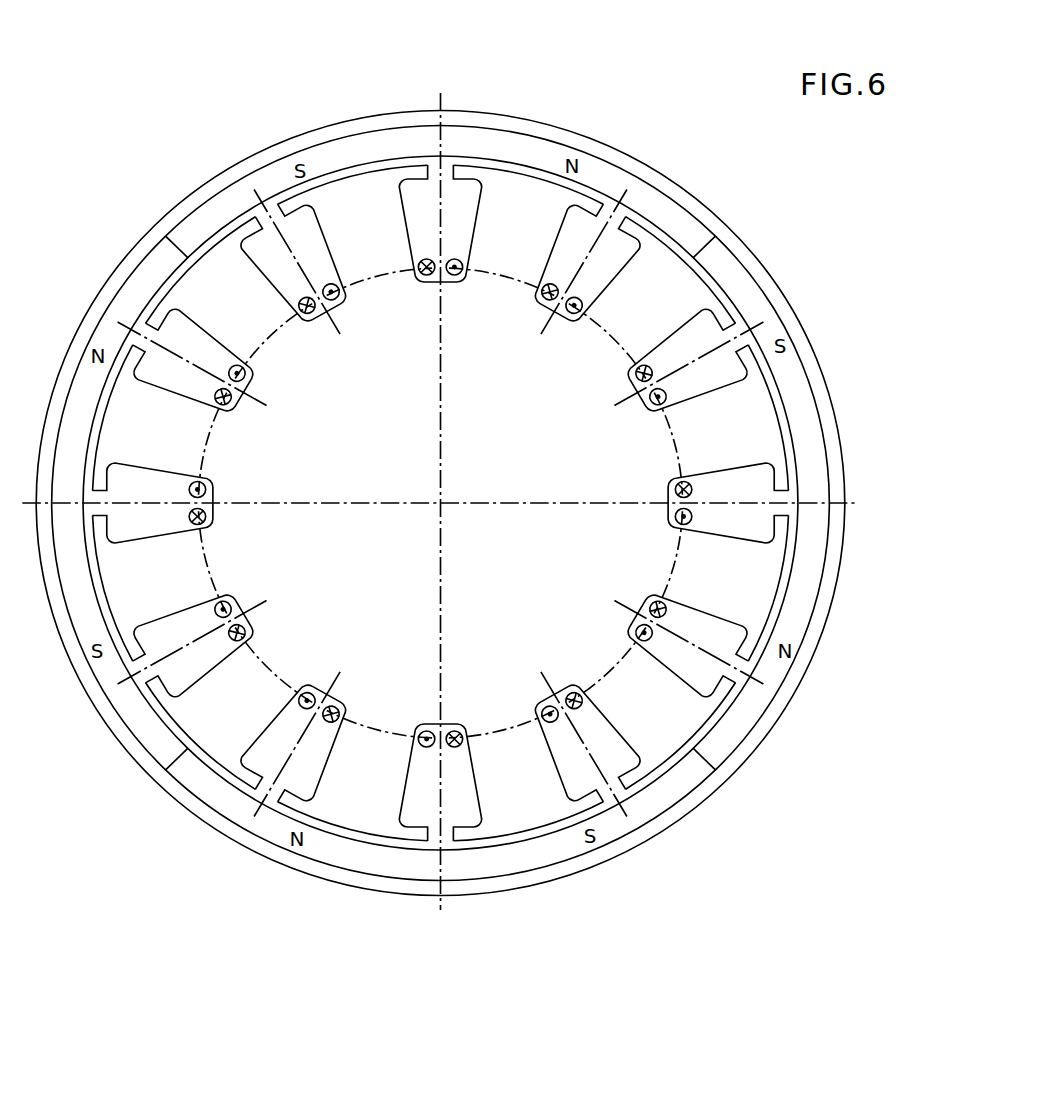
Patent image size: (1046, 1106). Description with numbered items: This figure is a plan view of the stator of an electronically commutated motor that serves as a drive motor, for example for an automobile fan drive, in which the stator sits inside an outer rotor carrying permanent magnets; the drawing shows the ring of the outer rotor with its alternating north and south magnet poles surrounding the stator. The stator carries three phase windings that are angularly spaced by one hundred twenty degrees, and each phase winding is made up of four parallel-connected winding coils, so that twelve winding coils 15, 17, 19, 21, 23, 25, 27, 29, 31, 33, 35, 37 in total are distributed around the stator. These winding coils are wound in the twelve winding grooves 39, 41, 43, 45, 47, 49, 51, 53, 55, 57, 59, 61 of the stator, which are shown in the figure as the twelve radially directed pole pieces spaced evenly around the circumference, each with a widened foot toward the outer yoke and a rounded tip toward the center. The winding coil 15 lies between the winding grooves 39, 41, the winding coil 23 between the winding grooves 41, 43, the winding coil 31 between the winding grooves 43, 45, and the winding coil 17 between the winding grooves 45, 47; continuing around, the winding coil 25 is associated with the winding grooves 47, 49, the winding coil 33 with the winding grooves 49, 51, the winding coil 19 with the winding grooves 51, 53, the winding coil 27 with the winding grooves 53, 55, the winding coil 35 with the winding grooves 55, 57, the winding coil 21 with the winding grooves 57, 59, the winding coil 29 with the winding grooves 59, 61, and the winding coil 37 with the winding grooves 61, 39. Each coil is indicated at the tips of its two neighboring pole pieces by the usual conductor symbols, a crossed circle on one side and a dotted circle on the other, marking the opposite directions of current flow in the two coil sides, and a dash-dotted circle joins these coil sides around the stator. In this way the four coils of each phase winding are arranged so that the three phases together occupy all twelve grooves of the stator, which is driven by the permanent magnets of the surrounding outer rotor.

The winding coil 15 is at (377, 290).
The winding coil 17 is at (224, 556).
The winding coil 19 is at (508, 717).
The winding coil 21 is at (660, 438).
The winding coil 23 is at (275, 347).
The winding coil 25 is at (281, 662).
The winding coil 27 is at (614, 658).
The winding coil 29 is at (610, 343).
The winding coil 31 is at (224, 442).
The winding coil 33 is at (379, 718).
The winding coil 35 is at (660, 556).
The winding coil 37 is at (496, 289).
The winding groove 39 is at (414, 196).
The winding groove 41 is at (265, 250).
The winding groove 43 is at (185, 335).
The winding groove 45 is at (133, 524).
The winding groove 47 is at (188, 665).
The winding groove 49 is at (268, 775).
The winding groove 51 is at (421, 798).
The winding groove 53 is at (612, 765).
The winding groove 55 is at (716, 665).
The winding groove 57 is at (765, 478).
The winding groove 59 is at (690, 325).
The winding groove 61 is at (605, 245).